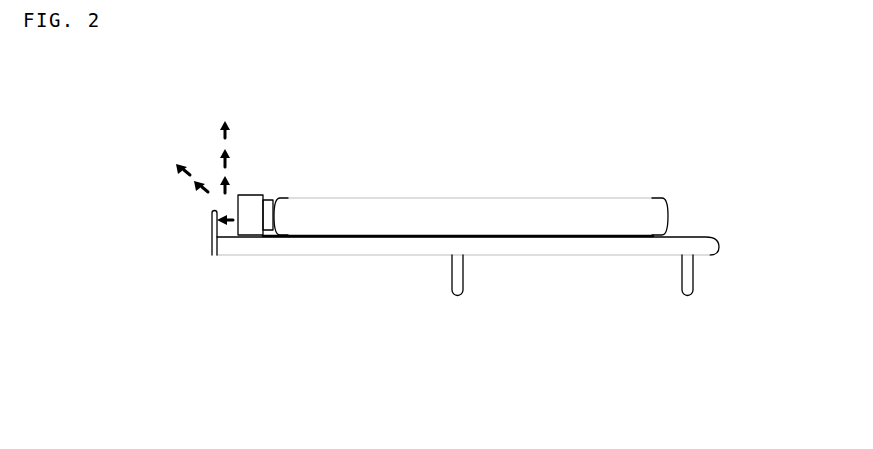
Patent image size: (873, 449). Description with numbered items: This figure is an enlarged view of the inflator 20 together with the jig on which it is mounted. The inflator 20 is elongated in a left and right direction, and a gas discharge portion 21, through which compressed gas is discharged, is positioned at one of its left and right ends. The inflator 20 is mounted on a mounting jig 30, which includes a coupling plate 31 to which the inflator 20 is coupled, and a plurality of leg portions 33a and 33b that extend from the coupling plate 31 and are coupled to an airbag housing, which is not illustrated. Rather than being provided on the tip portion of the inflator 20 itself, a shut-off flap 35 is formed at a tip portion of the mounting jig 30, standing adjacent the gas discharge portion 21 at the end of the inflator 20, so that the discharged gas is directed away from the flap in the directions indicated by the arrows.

The inflator 20 is at (430, 218).
The gas discharge portion 21 is at (267, 197).
The mounting jig 30 is at (418, 302).
The coupling plate 31 is at (355, 247).
The leg portion 33a is at (458, 282).
The leg portion 33b is at (685, 282).
The shut-off flap 35 is at (215, 225).